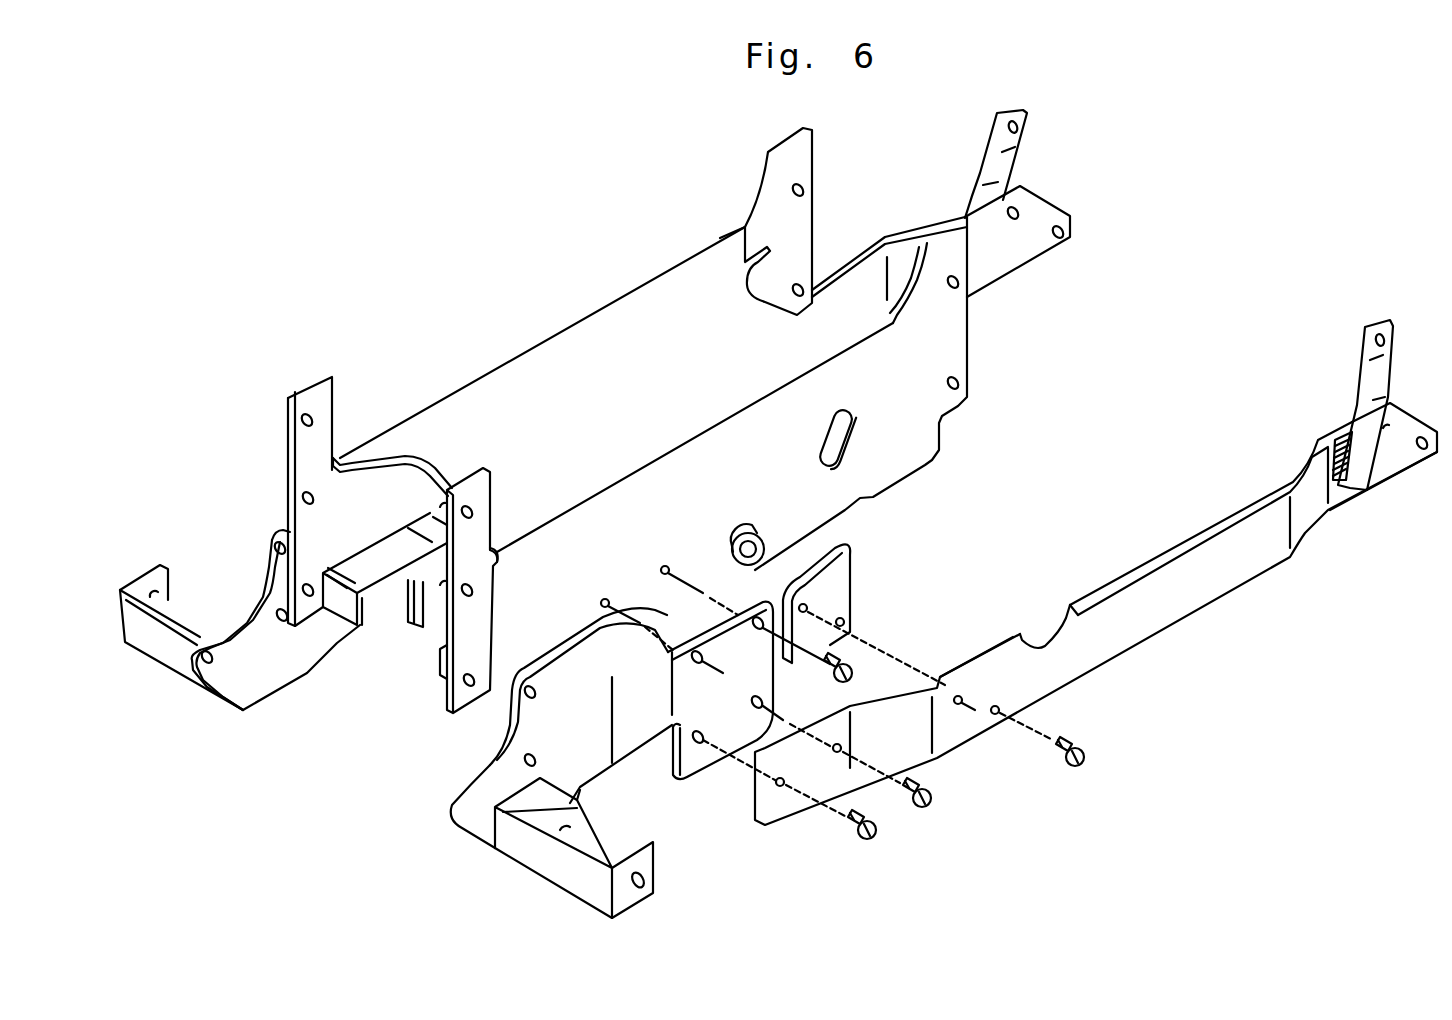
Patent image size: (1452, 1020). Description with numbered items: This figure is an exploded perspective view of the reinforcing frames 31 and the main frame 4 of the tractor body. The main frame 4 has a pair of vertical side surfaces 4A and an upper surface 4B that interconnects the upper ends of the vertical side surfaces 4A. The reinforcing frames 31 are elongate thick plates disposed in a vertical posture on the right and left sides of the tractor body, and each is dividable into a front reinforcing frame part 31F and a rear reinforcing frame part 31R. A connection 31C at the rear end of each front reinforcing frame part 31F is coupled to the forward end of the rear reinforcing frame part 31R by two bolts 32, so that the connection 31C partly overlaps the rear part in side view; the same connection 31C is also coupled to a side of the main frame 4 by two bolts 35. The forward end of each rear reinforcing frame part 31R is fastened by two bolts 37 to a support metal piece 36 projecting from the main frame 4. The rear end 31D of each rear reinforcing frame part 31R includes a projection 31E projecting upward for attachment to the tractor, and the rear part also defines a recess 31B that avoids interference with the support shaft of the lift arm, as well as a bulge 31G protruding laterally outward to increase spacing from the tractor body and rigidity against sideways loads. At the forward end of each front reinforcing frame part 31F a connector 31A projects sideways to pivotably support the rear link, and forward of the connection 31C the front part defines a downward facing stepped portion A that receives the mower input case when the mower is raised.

The main frame 4 is at (566, 332).
The vertical side surfaces 4A is at (350, 500).
The upper surface 4B is at (445, 415).
The reinforcing frames 31 is at (778, 516).
The front reinforcing frame part 31F is at (245, 715).
The rear reinforcing frame part 31R is at (858, 283).
The connector 31A is at (178, 640).
The recess 31B is at (1037, 640).
The connection 31C is at (665, 602).
The rear end 31D is at (1013, 245).
The projection 31E is at (980, 160).
The bulge 31G is at (1143, 556).
The bolts 32 is at (927, 817).
The bolts 35 is at (848, 675).
The support metal piece 36 is at (850, 573).
The bolts 37 is at (1077, 762).
The stepped portion A is at (382, 640).